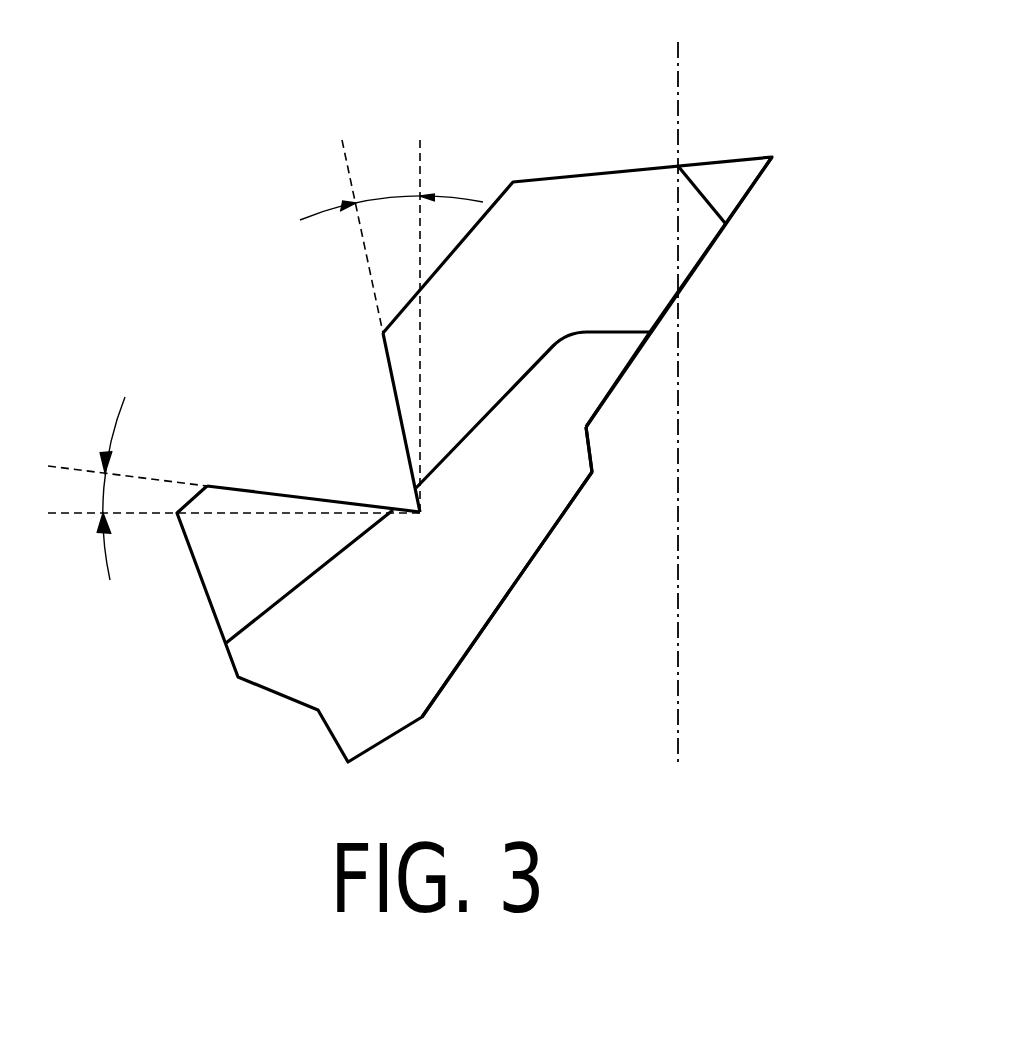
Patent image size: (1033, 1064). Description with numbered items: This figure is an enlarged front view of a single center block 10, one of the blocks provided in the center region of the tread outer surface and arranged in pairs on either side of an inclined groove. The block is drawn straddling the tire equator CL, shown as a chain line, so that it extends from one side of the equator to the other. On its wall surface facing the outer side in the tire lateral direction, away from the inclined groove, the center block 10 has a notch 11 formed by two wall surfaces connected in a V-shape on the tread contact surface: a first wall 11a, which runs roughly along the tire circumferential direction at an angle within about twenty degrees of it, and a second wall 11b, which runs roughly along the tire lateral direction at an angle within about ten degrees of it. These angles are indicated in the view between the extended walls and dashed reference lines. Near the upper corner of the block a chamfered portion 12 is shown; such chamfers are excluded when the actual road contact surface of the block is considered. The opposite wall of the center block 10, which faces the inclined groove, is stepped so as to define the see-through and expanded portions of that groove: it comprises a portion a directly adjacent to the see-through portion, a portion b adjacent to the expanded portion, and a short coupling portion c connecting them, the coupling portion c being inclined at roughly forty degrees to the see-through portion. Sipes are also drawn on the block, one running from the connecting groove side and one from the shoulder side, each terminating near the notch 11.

The center block 10 is at (594, 186).
The notch 11 is at (307, 419).
The first wall 11a is at (399, 412).
The second wall 11b is at (303, 495).
The chamfered portion 12 is at (727, 190).
The portion a is at (480, 633).
The portion b is at (687, 280).
The coupling portion c is at (590, 448).
The tire equator CL is at (675, 385).